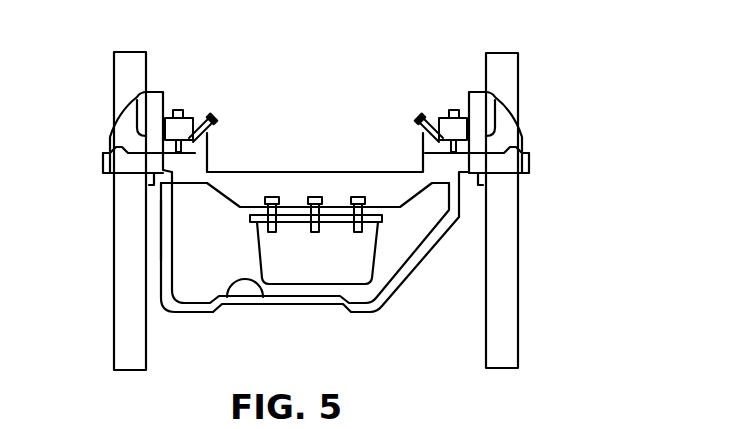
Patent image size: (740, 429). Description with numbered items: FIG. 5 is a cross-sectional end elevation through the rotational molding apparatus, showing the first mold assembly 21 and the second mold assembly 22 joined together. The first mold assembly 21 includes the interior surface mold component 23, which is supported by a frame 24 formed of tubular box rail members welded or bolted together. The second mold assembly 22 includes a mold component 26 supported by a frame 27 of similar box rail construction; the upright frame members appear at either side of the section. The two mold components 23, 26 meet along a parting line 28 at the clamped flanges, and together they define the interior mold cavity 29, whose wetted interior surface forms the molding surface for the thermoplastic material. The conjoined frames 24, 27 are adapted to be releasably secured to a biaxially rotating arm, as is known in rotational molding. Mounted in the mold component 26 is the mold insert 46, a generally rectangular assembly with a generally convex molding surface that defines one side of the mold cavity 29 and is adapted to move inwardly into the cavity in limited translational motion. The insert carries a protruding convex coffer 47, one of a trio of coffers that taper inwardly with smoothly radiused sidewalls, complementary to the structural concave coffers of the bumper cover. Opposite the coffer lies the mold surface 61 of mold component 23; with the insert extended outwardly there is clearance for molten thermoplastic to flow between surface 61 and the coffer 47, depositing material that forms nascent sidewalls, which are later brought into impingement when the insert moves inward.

The first mold assembly 21 is at (403, 320).
The second mold assembly 22 is at (359, 80).
The interior surface mold component 23 is at (207, 313).
The frame 24 is at (505, 275).
The mold component 26 is at (167, 104).
The frame 27 is at (512, 75).
The parting line 28 is at (155, 150).
The interior mold cavity 29 is at (190, 250).
The mold insert 46 is at (283, 172).
The convex coffer 47 is at (327, 258).
The mold surface 61 is at (265, 295).